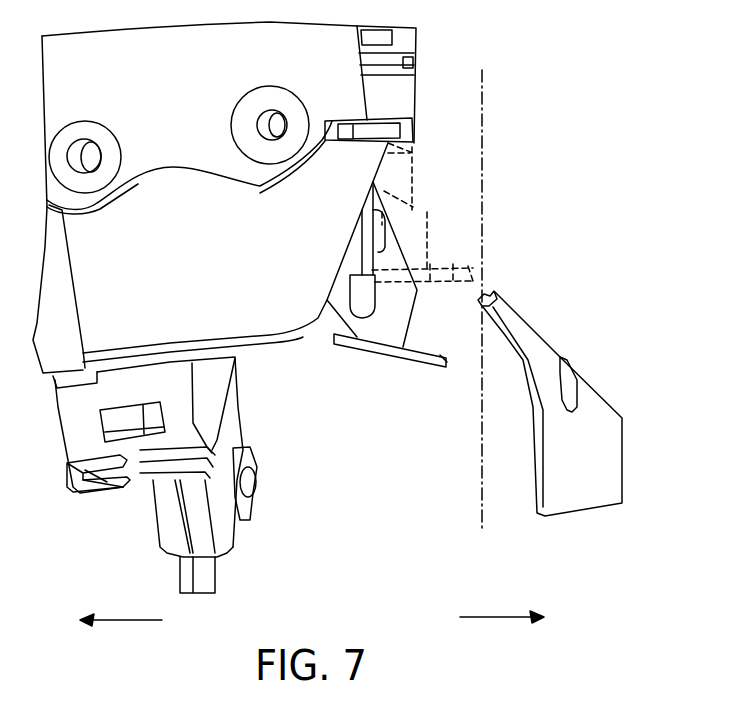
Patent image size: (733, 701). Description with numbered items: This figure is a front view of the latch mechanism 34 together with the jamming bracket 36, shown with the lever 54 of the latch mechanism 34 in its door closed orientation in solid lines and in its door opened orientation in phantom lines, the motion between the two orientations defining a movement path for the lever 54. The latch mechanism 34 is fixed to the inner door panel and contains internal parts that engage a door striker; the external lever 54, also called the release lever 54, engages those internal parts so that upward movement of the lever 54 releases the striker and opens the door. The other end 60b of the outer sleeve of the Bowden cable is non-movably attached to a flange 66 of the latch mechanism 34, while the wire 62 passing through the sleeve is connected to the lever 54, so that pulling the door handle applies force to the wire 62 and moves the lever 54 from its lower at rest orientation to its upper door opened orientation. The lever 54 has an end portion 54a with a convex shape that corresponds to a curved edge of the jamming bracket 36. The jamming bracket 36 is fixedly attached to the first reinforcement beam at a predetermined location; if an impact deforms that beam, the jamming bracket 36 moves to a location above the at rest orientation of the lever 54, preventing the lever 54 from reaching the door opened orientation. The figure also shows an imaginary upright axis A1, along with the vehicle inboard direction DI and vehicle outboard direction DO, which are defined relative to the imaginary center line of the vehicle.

The latch mechanism 34 is at (190, 209).
The jamming bracket 36 is at (604, 380).
The lever 54 is at (362, 350).
The end portion 54a is at (441, 361).
The other end of the outer sleeve 60b is at (404, 42).
The wire 62 is at (382, 212).
The flange 66 is at (408, 139).
The imaginary upright axis A1 is at (486, 182).
The vehicle inboard direction DI is at (128, 622).
The vehicle outboard direction DO is at (497, 619).